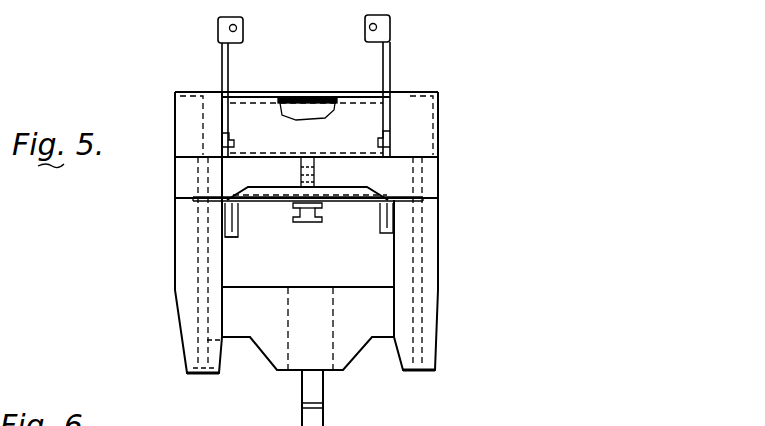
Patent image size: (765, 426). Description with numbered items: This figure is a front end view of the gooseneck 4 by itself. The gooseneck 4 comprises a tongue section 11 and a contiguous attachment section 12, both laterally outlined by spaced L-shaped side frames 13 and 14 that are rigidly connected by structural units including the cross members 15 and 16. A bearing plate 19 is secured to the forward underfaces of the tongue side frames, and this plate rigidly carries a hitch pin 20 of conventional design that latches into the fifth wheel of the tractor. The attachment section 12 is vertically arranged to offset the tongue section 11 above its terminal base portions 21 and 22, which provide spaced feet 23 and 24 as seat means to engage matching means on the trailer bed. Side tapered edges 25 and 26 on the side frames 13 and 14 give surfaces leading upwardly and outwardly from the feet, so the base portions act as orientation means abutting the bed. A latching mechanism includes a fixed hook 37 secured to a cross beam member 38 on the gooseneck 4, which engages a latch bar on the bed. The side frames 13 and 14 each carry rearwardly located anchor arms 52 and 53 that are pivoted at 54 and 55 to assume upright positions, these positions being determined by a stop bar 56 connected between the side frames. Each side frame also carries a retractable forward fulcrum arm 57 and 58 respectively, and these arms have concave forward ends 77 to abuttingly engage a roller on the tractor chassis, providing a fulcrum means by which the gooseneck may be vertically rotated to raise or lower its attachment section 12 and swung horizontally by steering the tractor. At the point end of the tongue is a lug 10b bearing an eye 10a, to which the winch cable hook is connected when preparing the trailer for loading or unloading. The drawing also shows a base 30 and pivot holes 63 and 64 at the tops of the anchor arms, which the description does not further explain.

The gooseneck 4 is at (443, 225).
The eye 10a is at (317, 172).
The lug 10b is at (298, 163).
The tongue section 11 is at (440, 112).
The attachment section 12 is at (172, 290).
The side frame 13 is at (430, 250).
The side frame 14 is at (175, 244).
The cross member 15 is at (427, 170).
The cross member 16 is at (267, 110).
The bearing plate 19 is at (268, 204).
The hitch pin 20 is at (307, 223).
The base portion 21 is at (432, 342).
The base portion 22 is at (190, 352).
The foot 23 is at (427, 372).
The foot 24 is at (198, 375).
The side tapered edge 25 is at (223, 360).
The side tapered edge 26 is at (187, 363).
The base 30 is at (457, 421).
The fixed hook 37 is at (318, 385).
The cross beam member 38 is at (307, 302).
The anchor arm 52 is at (392, 57).
The anchor arm 53 is at (218, 60).
The pivot 54 is at (378, 136).
The pivot 55 is at (235, 140).
The stop bar 56 is at (317, 98).
The fulcrum arm 57 is at (380, 215).
The fulcrum arm 58 is at (248, 227).
The pivot hole 63 is at (377, 27).
The pivot hole 64 is at (237, 28).
The concave forward end 77 is at (230, 218).